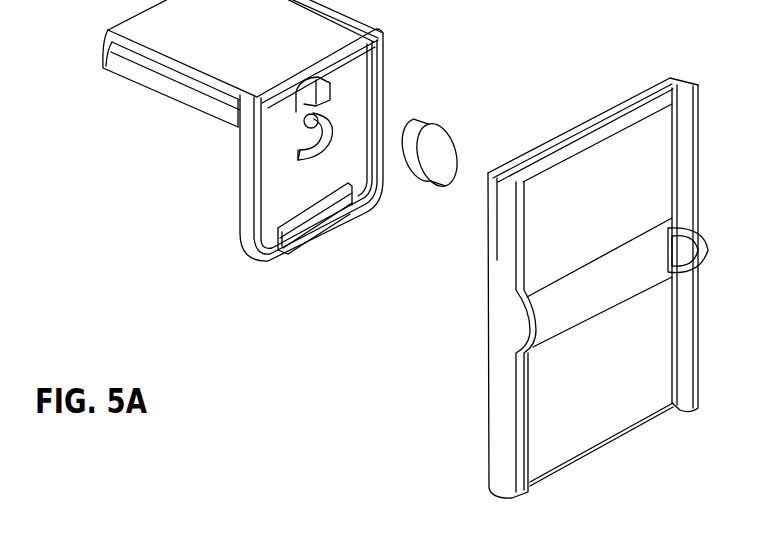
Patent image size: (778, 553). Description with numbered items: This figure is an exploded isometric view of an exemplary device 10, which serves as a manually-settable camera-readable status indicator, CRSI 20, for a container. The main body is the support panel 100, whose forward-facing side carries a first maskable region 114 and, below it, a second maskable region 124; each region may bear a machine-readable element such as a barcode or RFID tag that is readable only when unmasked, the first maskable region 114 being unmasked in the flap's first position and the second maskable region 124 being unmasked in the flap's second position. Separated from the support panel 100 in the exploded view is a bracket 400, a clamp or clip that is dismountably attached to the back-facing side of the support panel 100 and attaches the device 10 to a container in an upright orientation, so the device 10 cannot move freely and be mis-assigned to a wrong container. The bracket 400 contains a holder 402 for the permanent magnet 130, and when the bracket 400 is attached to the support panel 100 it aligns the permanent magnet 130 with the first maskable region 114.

The device 10 is at (335, 375).
The camera-readable status indicator 20 is at (500, 292).
The support panel 100 is at (503, 338).
The first maskable region 114 is at (607, 165).
The second maskable region 124 is at (612, 391).
The permanent magnet 130 is at (446, 123).
The bracket 400 is at (270, 203).
The holder 402 is at (300, 155).